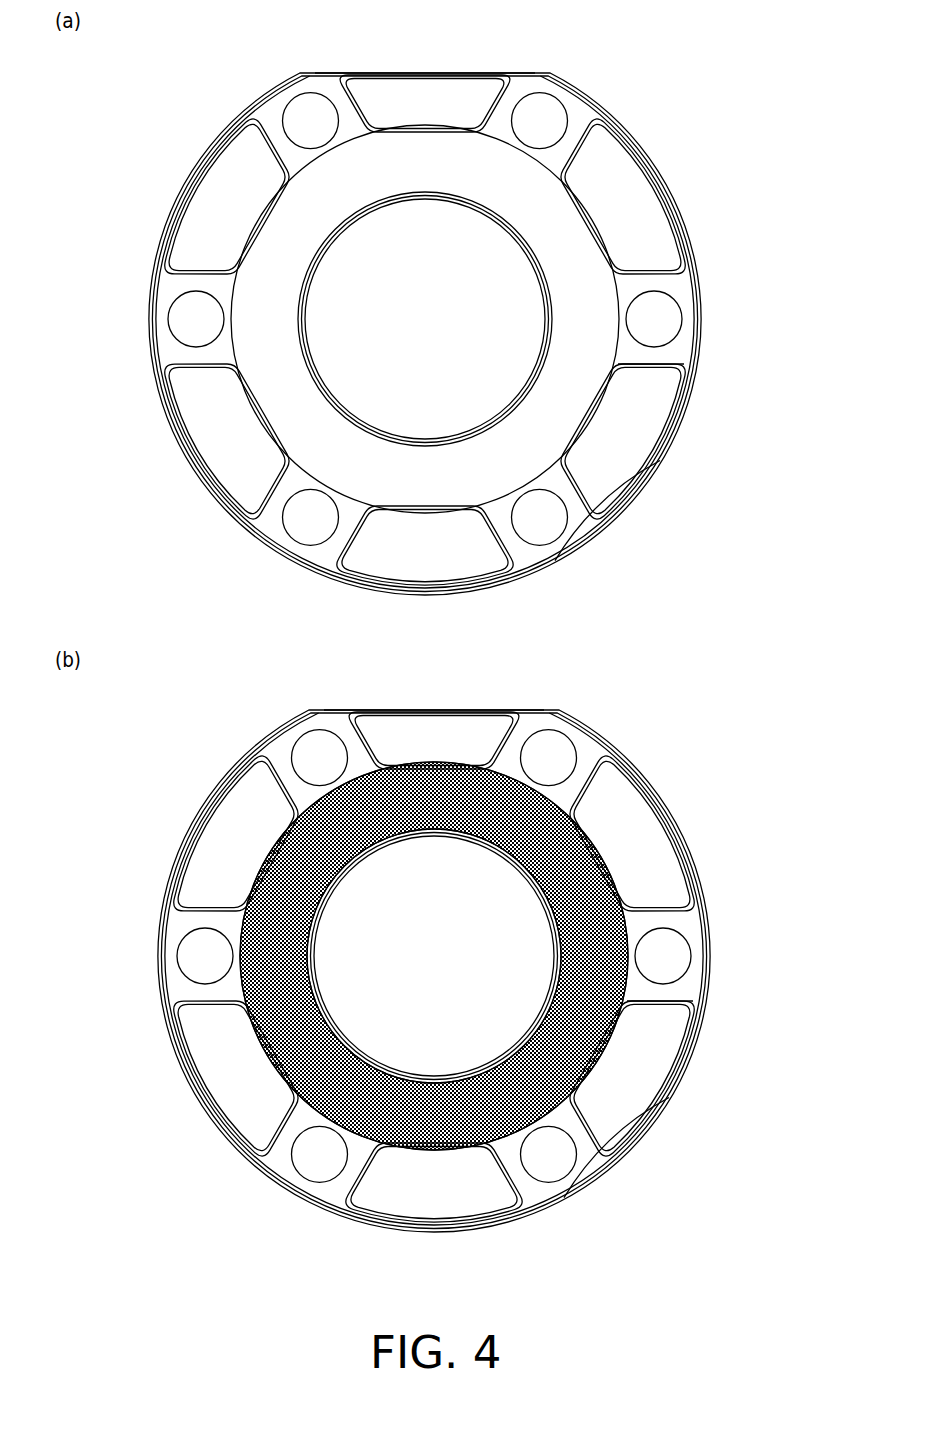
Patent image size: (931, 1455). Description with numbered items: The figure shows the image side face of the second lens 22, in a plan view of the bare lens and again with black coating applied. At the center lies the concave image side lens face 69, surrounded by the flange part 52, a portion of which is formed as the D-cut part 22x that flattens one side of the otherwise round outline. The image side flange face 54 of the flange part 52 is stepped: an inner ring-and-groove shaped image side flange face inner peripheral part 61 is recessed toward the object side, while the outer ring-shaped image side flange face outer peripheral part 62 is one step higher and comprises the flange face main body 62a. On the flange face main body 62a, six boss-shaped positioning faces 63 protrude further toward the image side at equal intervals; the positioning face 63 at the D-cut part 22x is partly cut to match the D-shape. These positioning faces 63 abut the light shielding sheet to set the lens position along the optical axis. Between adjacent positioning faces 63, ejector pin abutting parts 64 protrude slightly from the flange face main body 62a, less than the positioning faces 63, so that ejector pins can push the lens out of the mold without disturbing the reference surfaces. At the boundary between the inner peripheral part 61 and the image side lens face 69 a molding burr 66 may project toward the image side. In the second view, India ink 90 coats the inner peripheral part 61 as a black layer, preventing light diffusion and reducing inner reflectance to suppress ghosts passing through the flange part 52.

The second lens 22 is at (121, 31).
The D-cut part 22x is at (510, 74).
The flange part 52 is at (682, 442).
The image side flange face 54 is at (622, 370).
The image side flange face inner peripheral part 61 is at (549, 226).
The image side flange face outer peripheral part 62 is at (697, 290).
The flange face main body 62a is at (584, 527).
The positioning face 63 is at (428, 93).
The ejector pin abutting part 64 is at (305, 113).
The burr 66 is at (312, 259).
The image side lens face 69 is at (419, 291).
The India ink 90 is at (265, 1030).